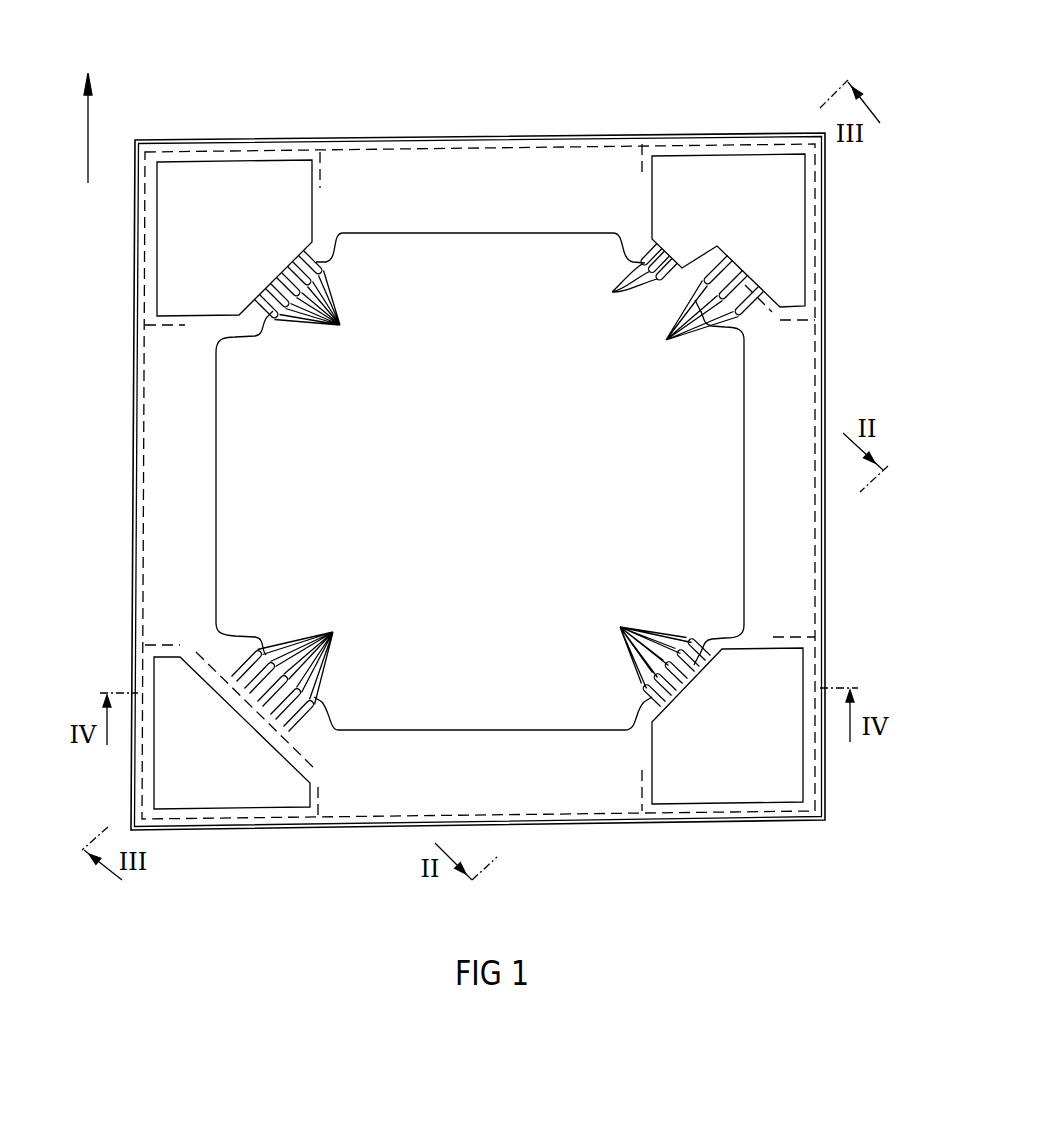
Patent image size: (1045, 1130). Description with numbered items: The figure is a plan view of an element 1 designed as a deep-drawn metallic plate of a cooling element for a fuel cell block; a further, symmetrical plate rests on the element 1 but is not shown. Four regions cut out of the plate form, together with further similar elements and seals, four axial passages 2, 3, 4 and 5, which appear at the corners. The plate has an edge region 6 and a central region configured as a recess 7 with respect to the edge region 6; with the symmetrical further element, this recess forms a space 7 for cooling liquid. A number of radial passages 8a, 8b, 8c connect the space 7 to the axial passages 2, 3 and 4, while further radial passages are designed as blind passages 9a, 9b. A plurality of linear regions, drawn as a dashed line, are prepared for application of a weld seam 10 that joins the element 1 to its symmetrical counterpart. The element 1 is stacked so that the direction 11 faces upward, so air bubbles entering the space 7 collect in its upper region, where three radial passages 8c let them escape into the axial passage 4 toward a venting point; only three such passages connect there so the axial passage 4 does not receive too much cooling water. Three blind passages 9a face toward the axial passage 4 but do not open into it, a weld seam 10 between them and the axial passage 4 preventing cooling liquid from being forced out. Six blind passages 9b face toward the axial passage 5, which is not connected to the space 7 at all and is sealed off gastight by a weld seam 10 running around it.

The element 1 is at (474, 27).
The axial passage 2 is at (232, 178).
The axial passage 3 is at (750, 783).
The axial passage 4 is at (790, 231).
The axial passage 5 is at (228, 790).
The edge region 6 is at (512, 180).
The recess 7 is at (270, 527).
The radial passages 8a is at (311, 307).
The radial passages 8b is at (647, 656).
The radial passages 8c is at (627, 285).
The blind passages 9a is at (700, 314).
The blind passages 9b is at (299, 666).
The weld seam 10 is at (318, 190).
The direction 11 is at (90, 115).